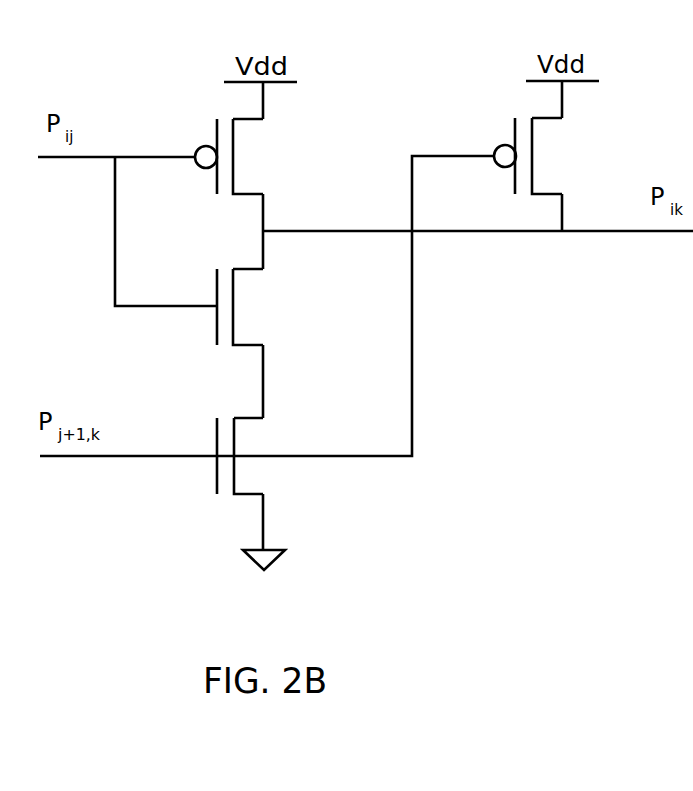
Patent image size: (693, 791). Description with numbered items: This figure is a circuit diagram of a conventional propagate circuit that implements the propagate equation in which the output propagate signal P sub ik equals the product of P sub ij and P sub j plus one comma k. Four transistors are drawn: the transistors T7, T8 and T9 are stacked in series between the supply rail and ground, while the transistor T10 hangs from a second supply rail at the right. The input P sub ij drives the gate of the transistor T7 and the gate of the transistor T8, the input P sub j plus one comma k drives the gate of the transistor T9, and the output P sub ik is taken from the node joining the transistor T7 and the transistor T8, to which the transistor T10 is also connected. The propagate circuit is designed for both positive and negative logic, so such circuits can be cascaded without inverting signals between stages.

The p-channel transistor T7 is at (242, 156).
The n-channel transistor T8 is at (253, 307).
The n-channel transistor T9 is at (266, 455).
The p-channel transistor T10 is at (548, 156).